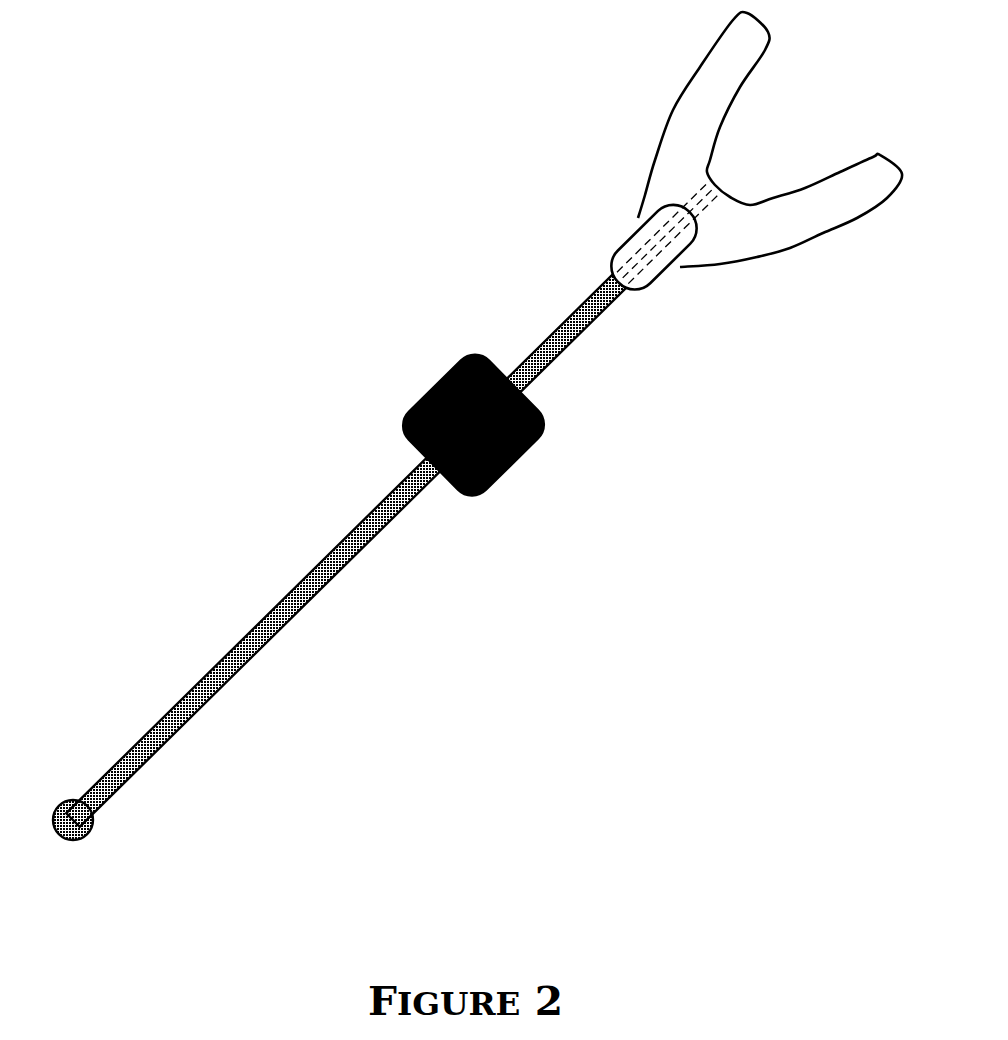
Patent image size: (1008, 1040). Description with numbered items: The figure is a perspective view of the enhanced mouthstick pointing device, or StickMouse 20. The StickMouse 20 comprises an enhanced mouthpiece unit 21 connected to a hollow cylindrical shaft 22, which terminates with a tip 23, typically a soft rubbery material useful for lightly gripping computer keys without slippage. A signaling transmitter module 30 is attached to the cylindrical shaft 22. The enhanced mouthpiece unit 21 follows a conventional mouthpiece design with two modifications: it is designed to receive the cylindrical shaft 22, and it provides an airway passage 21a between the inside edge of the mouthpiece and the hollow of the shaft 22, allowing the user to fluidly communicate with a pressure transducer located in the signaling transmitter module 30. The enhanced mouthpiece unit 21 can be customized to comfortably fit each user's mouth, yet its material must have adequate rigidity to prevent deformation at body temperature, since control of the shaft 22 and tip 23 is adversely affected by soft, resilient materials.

The enhanced mouthstick pointing device 20 is at (477, 443).
The enhanced mouthpiece unit 21 is at (793, 248).
The airway passage 21a is at (745, 180).
The hollow cylindrical shaft 22 is at (577, 340).
The tip 23 is at (80, 840).
The signaling transmitter module 30 is at (503, 483).